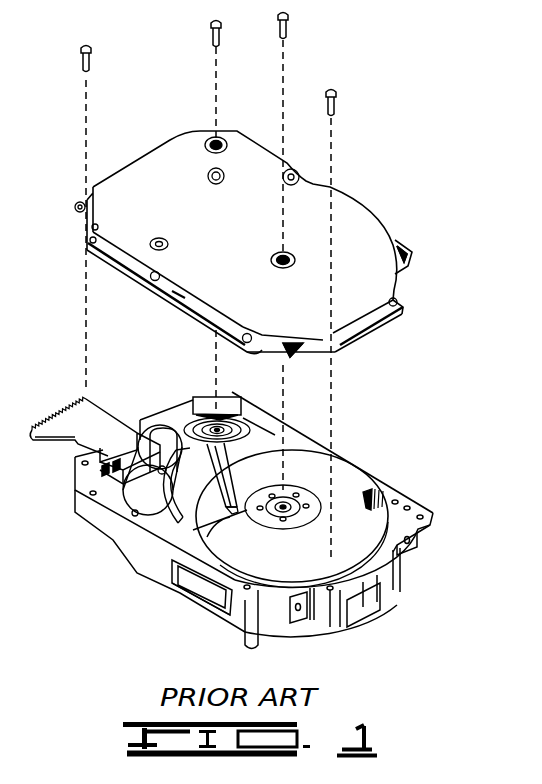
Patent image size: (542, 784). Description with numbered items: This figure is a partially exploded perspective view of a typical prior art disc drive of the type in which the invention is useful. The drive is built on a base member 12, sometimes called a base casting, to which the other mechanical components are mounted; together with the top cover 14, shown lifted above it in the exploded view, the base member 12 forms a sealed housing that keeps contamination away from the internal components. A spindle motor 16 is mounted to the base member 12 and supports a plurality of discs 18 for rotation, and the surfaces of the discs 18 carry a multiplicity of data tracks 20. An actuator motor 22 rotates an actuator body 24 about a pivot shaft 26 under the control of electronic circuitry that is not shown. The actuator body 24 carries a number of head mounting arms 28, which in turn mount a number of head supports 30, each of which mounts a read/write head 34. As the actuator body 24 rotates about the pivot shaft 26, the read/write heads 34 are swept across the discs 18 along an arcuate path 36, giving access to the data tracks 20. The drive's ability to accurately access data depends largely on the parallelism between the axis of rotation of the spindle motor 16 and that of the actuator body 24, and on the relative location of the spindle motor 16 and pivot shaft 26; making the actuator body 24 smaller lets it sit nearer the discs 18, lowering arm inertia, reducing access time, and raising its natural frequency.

The base member 12 is at (120, 547).
The top cover 14 is at (363, 221).
The spindle motor 16 is at (293, 520).
The discs 18 is at (347, 480).
The data tracks 20 is at (353, 487).
The actuator motor 22 is at (263, 395).
The actuator body 24 is at (238, 466).
The pivot shaft 26 is at (193, 396).
The head mounting arms 28 is at (215, 489).
The head supports 30 is at (160, 535).
The read/write head 34 is at (213, 505).
The arcuate path 36 is at (167, 577).